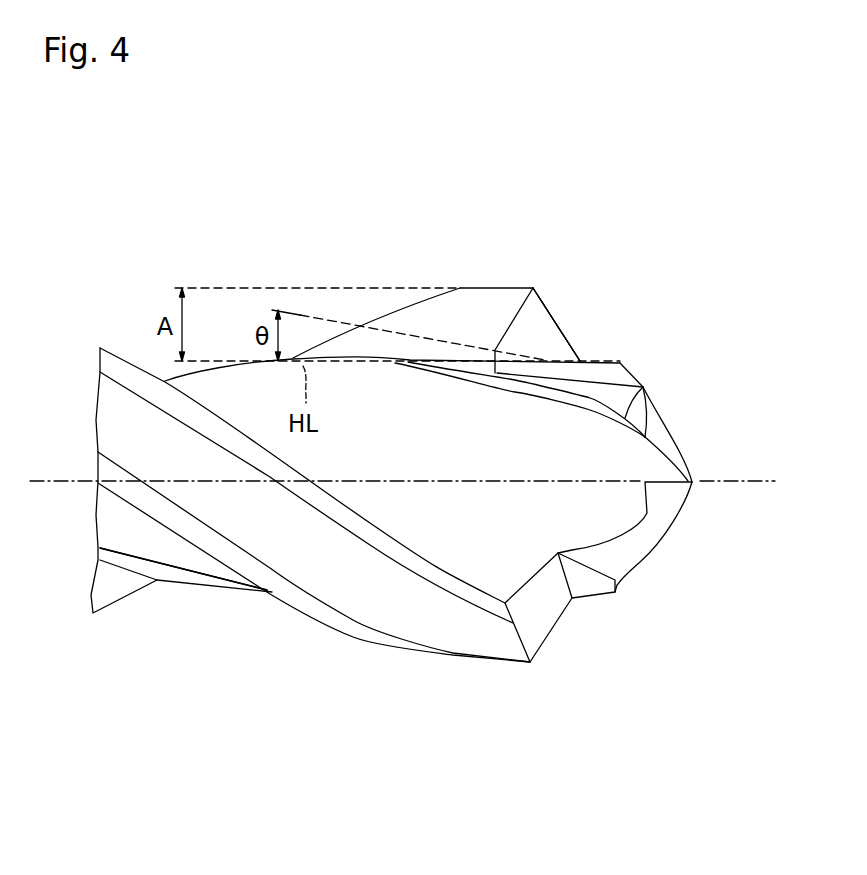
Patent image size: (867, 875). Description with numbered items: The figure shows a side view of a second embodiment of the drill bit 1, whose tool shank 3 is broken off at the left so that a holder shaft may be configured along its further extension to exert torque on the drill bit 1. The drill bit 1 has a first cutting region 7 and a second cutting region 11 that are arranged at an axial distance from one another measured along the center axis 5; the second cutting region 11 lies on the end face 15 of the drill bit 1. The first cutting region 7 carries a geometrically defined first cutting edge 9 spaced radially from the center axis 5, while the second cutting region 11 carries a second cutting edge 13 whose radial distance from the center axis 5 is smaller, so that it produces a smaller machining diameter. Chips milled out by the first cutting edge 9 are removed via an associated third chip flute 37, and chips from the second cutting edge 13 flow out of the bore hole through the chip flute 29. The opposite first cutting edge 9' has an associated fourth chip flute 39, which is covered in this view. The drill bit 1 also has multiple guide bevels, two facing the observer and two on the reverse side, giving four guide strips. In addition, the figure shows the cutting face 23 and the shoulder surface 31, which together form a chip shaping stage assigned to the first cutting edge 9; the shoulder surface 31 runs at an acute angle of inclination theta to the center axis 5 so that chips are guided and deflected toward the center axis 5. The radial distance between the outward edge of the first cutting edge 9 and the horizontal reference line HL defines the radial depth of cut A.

The drill bit 1 is at (90, 305).
The tool shank 3 is at (379, 310).
The center axis 5 is at (742, 484).
The first cutting region 7 is at (544, 274).
The first cutting edge 9 is at (574, 295).
The first cutting edge 9' is at (620, 593).
The second cutting region 11 is at (648, 357).
The second cutting edge 13 is at (668, 455).
The end face 15 is at (680, 418).
The cutting face 23 is at (552, 325).
The chip flute 29 is at (488, 445).
The shoulder surface 31 is at (545, 351).
The third chip flute 37 is at (494, 323).
The fourth chip flute 39 is at (106, 542).